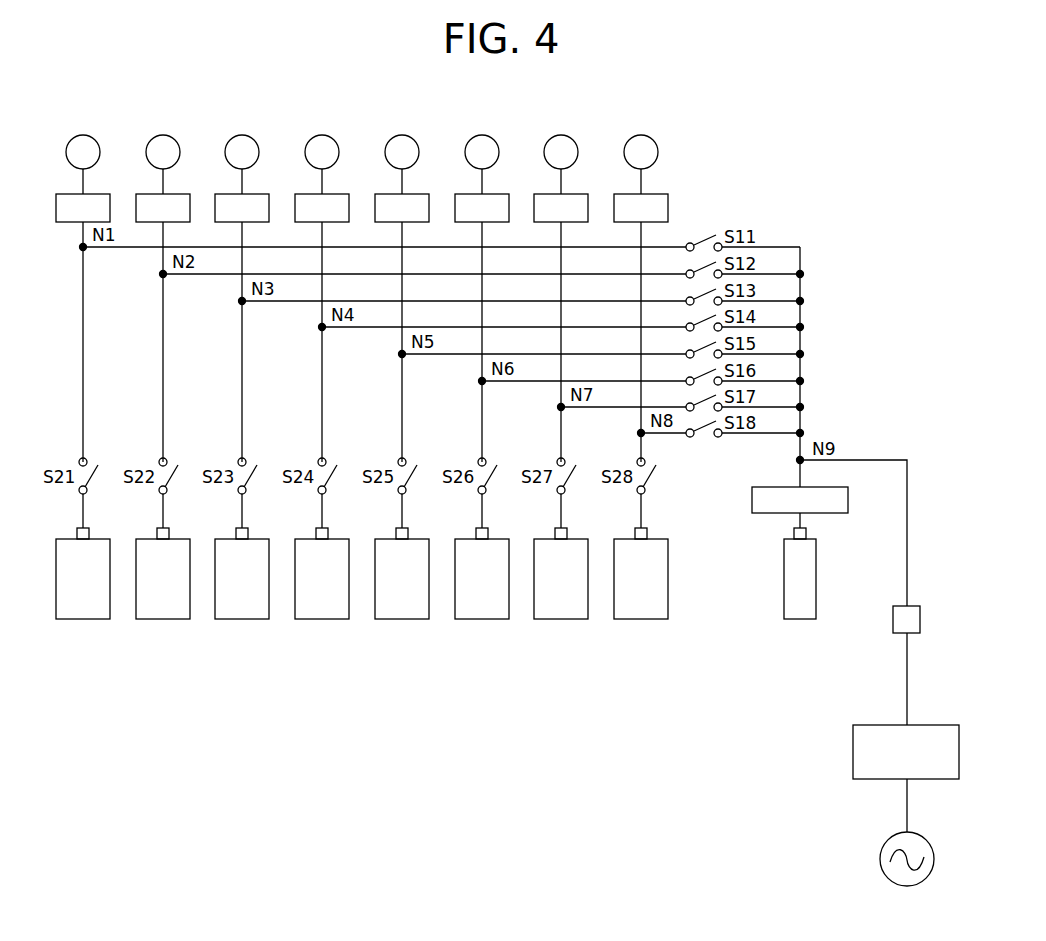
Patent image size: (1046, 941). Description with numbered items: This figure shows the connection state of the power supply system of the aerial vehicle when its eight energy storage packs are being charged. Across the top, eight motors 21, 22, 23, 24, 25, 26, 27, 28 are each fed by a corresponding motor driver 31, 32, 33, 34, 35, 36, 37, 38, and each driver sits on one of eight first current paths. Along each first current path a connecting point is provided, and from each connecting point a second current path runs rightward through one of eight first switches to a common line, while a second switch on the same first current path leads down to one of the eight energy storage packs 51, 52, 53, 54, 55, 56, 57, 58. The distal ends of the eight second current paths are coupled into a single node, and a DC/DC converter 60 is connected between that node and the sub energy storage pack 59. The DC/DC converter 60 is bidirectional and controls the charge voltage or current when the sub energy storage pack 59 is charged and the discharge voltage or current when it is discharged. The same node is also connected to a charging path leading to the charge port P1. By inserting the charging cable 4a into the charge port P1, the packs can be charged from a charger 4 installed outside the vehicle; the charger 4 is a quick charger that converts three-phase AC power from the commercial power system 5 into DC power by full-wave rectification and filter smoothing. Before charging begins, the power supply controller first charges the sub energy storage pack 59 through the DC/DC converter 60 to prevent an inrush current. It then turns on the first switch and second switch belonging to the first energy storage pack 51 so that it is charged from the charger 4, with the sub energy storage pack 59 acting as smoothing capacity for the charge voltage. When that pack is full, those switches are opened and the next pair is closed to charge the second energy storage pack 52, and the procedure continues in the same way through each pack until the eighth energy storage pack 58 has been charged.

The motor 21 is at (98, 141).
The motor 22 is at (178, 141).
The motor 23 is at (257, 141).
The motor 24 is at (337, 141).
The motor 25 is at (417, 141).
The motor 26 is at (497, 141).
The motor 27 is at (576, 141).
The motor 28 is at (656, 141).
The motor driver 31 is at (106, 194).
The motor driver 32 is at (186, 194).
The motor driver 33 is at (265, 194).
The motor driver 34 is at (345, 194).
The motor driver 35 is at (425, 194).
The motor driver 36 is at (505, 194).
The motor driver 37 is at (584, 194).
The motor driver 38 is at (664, 194).
The first energy storage pack 51 is at (101, 539).
The second energy storage pack 52 is at (181, 539).
The energy storage pack 53 is at (260, 539).
The energy storage pack 54 is at (340, 539).
The energy storage pack 55 is at (420, 539).
The energy storage pack 56 is at (500, 539).
The energy storage pack 57 is at (579, 539).
The eighth energy storage pack 58 is at (659, 539).
The sub energy storage pack 59 is at (816, 573).
The DC/DC converter 60 is at (772, 487).
The charge port P1 is at (920, 606).
The charging cable 4a is at (908, 690).
The charger 4 is at (935, 725).
The commercial power system 5 is at (918, 832).